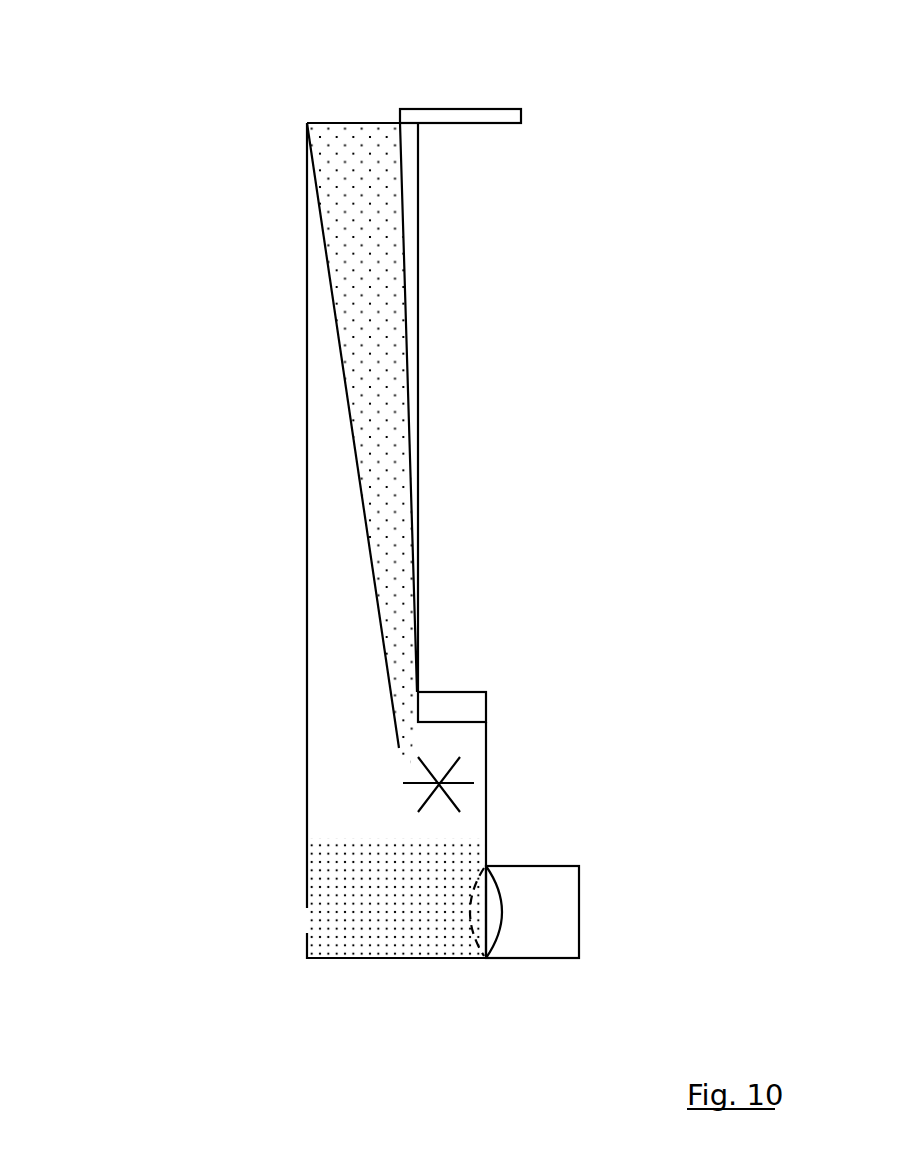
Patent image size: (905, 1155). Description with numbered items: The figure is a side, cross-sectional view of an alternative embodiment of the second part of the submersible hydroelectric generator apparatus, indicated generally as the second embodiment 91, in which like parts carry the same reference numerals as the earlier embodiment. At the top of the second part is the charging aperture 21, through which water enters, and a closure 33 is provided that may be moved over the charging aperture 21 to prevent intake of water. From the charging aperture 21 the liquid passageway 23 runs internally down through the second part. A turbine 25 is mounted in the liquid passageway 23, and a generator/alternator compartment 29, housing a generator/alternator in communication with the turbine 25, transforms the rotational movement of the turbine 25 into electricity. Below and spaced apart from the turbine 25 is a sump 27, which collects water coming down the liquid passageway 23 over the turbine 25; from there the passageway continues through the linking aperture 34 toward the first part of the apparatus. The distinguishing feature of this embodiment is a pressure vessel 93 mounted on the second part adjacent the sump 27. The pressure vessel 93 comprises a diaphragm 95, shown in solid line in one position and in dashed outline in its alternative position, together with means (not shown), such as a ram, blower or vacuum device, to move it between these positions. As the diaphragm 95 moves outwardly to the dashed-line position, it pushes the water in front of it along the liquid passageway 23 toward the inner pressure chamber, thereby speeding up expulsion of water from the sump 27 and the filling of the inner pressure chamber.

The second embodiment of the second part 91 is at (187, 126).
The charging aperture 21 is at (352, 123).
The closure 33 is at (482, 108).
The liquid passageway 23 is at (382, 282).
The generator/alternator compartment 29 is at (473, 712).
The turbine 25 is at (453, 792).
The sump 27 is at (377, 873).
The linking aperture 34 is at (303, 925).
The pressure vessel 93 is at (568, 888).
The diaphragm 95 is at (503, 928).